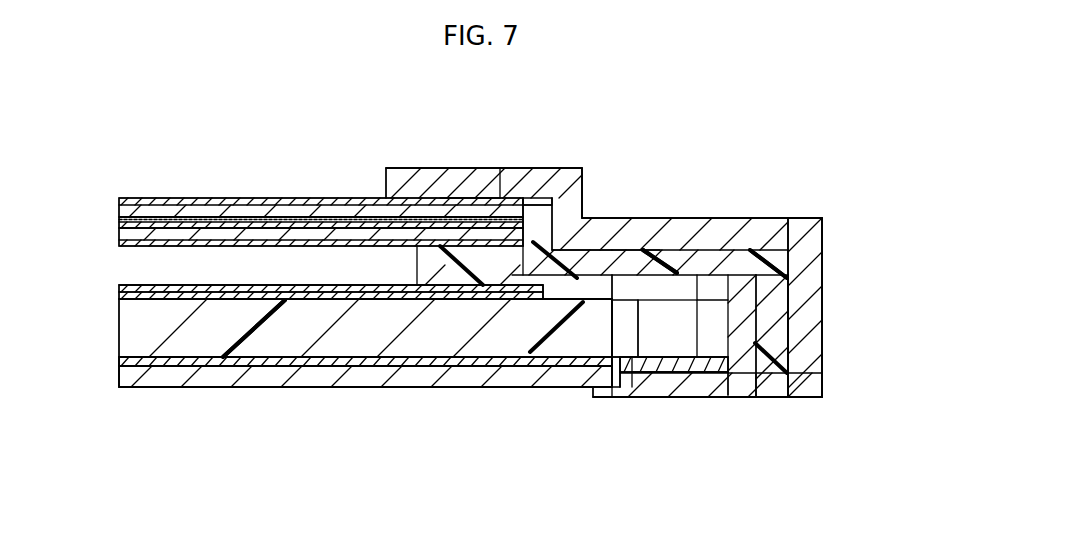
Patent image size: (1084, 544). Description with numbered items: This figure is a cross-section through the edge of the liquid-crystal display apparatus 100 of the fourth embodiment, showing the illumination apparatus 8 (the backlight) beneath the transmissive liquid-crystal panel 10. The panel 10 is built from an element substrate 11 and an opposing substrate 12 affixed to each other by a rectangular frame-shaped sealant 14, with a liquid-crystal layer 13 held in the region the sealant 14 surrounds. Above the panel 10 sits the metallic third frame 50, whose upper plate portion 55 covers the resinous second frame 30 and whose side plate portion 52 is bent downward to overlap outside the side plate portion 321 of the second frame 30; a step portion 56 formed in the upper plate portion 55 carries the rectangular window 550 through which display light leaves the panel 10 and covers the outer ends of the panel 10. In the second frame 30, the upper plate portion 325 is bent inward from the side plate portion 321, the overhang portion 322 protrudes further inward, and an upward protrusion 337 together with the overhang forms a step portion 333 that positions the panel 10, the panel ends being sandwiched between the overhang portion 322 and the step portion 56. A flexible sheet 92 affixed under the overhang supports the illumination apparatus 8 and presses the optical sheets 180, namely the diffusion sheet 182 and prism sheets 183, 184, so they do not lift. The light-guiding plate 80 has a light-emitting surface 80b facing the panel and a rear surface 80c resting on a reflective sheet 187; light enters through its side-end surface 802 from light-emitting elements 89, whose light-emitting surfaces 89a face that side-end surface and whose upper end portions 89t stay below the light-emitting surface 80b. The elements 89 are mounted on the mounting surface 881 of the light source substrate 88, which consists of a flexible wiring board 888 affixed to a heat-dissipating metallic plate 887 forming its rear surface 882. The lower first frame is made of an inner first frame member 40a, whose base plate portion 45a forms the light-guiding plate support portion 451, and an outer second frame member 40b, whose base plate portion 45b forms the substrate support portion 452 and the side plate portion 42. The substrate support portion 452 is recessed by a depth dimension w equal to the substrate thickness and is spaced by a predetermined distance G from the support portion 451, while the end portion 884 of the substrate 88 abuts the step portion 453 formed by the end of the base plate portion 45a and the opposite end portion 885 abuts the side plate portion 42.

The liquid-crystal display apparatus 100 is at (604, 62).
The liquid-crystal panel 10 is at (306, 149).
The element substrate 11 is at (208, 238).
The opposing substrate 12 is at (243, 213).
The liquid-crystal layer 13 is at (290, 213).
The sealant 14 is at (400, 248).
The step portion 56 is at (415, 190).
The window 550 is at (386, 192).
The overhang portion 322 is at (468, 196).
The step portion 333 is at (525, 212).
The flexible sheet 92 is at (540, 200).
The protrusion 337 is at (553, 225).
The upper plate portion 55 is at (603, 217).
The third frame 50 is at (585, 170).
The light source substrate 88 is at (743, 173).
The flexible wiring board 888 is at (672, 300).
The metallic plate 887 is at (712, 300).
The upper end portion 89t is at (614, 262).
The light-emitting element 89 is at (652, 300).
The light-emitting surface 89a is at (635, 330).
The upper plate portion 325 is at (745, 250).
The mounting surface 881 is at (797, 250).
The side plate portion 321 is at (825, 289).
The side plate portion 52 is at (772, 302).
The side plate portion 42 is at (780, 335).
The second frame 30 is at (790, 360).
The illumination apparatus 8 is at (116, 285).
The light-guiding plate 80 is at (415, 330).
The light-emitting surface 80b is at (160, 297).
The rear surface 80c is at (178, 372).
The reflective sheet 187 is at (200, 372).
The optical sheets 180 is at (390, 433).
The prism sheet 184 is at (272, 300).
The prism sheet 183 is at (322, 302).
The diffusion sheet 182 is at (372, 304).
The first frame member 40a is at (230, 380).
The light-guiding plate support portion 451 is at (455, 362).
The base plate portion 45a is at (480, 382).
The side-end surface 802 is at (605, 352).
The second frame member 40b is at (668, 398).
The end portion 885 is at (705, 372).
The step portion 453 is at (630, 373).
The end portion 884 is at (620, 375).
The substrate support portion 452 is at (683, 372).
The rear surface 882 is at (745, 398).
The base plate portion 45b is at (770, 400).
The depth dimension w is at (748, 338).
The predetermined distance G is at (612, 402).